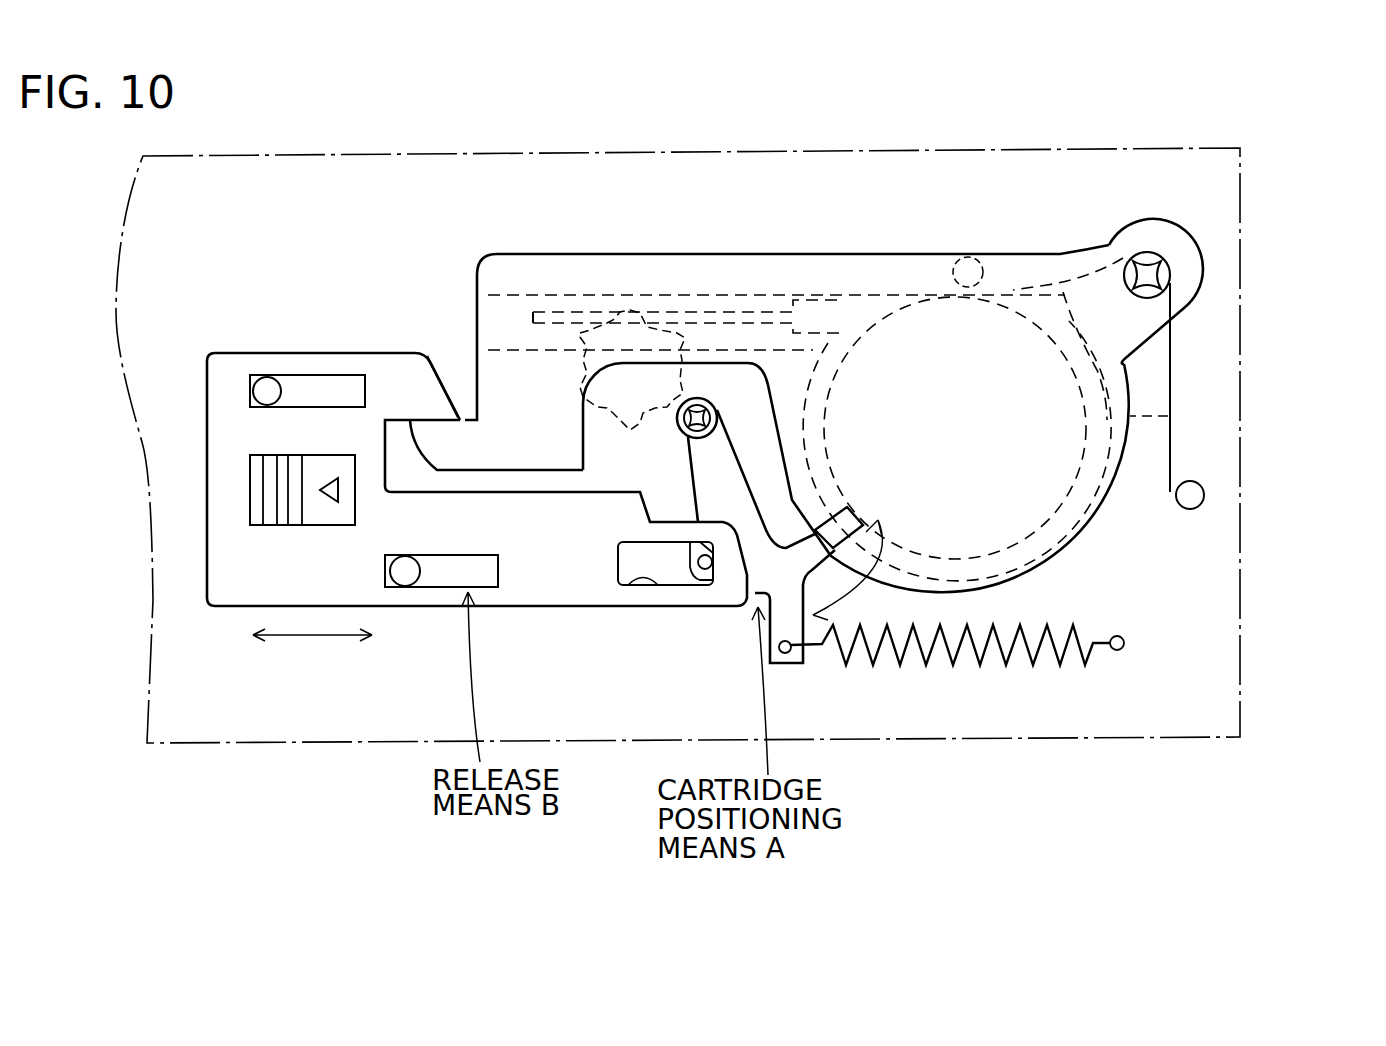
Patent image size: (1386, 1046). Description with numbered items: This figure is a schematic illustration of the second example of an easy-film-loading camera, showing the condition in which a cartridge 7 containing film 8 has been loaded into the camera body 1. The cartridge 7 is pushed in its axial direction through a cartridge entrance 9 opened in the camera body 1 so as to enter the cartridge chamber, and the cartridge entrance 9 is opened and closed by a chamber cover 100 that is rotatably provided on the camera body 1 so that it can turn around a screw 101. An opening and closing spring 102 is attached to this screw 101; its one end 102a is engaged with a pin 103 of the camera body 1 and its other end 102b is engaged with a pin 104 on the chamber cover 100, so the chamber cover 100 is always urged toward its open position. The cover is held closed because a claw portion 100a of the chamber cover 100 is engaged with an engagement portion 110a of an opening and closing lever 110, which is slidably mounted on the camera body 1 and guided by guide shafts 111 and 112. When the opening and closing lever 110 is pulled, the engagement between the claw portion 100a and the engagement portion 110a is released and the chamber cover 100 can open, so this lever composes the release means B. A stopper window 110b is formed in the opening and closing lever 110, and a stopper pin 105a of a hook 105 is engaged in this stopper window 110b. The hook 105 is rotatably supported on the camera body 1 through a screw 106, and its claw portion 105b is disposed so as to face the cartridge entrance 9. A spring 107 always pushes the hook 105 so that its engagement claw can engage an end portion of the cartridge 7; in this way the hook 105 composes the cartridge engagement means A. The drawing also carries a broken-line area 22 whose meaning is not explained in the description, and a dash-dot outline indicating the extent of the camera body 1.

The camera body 1 is at (300, 152).
The cartridge 7 is at (1002, 343).
The film 8 is at (675, 312).
The cartridge entrance 9 is at (1175, 418).
The chassis portion 22 is at (617, 343).
The chamber cover 100 is at (880, 262).
The claw portion 100a is at (462, 432).
The screw 101 is at (1150, 252).
The opening and closing spring 102 is at (1173, 340).
The one end of opening and closing spring 102a is at (1168, 500).
The other end of opening and closing spring 102b is at (1063, 292).
The pin 103 is at (1204, 495).
The pin 104 is at (966, 257).
The hook 105 is at (730, 480).
The stopper pin 105a is at (705, 569).
The claw portion 105b is at (850, 507).
The screw 106 is at (697, 405).
The spring 107 is at (940, 662).
The opening and closing lever 110 is at (217, 438).
The engagement portion 110a is at (403, 393).
The stopper window 110b is at (632, 587).
The guide shaft 111 is at (267, 388).
The guide shaft 112 is at (405, 578).